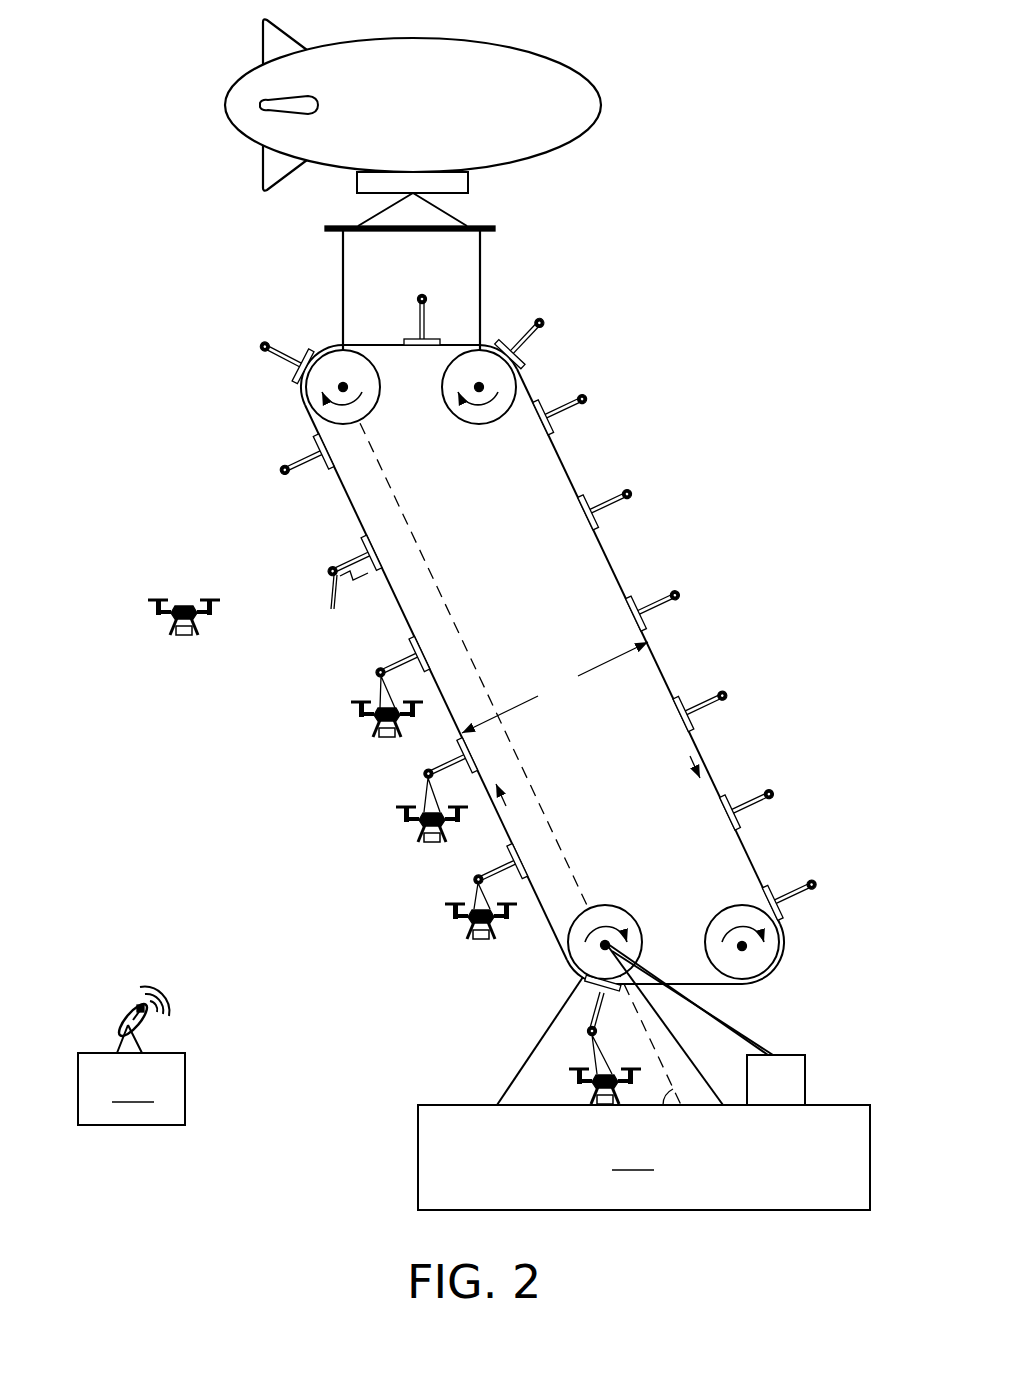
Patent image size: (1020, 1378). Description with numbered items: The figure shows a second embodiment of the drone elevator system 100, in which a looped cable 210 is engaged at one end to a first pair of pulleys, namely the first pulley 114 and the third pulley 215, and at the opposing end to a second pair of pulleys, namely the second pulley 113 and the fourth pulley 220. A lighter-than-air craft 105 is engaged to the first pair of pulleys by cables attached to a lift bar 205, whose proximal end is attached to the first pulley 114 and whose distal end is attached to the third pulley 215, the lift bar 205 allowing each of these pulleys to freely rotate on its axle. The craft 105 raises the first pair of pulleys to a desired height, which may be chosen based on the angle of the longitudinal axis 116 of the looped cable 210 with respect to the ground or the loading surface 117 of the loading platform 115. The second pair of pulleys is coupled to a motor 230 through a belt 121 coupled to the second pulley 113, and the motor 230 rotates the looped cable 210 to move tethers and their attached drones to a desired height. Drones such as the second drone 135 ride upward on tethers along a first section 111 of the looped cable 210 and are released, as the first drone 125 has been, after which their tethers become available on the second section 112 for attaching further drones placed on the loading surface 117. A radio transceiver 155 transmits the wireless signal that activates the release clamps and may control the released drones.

The drone elevator system 100 is at (806, 186).
The lighter-than-air craft 105 is at (392, 122).
The lift bar 205 is at (489, 221).
The looped cable 210 is at (716, 500).
The first section of the looped cable 111 is at (396, 598).
The second section of the looped cable 112 is at (624, 582).
The longitudinal axis of the looped cable 116 is at (436, 582).
The first pulley 114 is at (388, 399).
The third pulley 215 is at (483, 432).
The second pulley 113 is at (608, 898).
The fourth pulley 220 is at (718, 902).
The first drone 125 is at (140, 585).
The second drone 135 is at (340, 715).
The belt 121 is at (697, 1024).
The motor 230 is at (776, 1080).
The loading platform 115 is at (644, 1157).
The loading surface 117 is at (435, 1103).
The radio transceiver 155 is at (131, 1056).